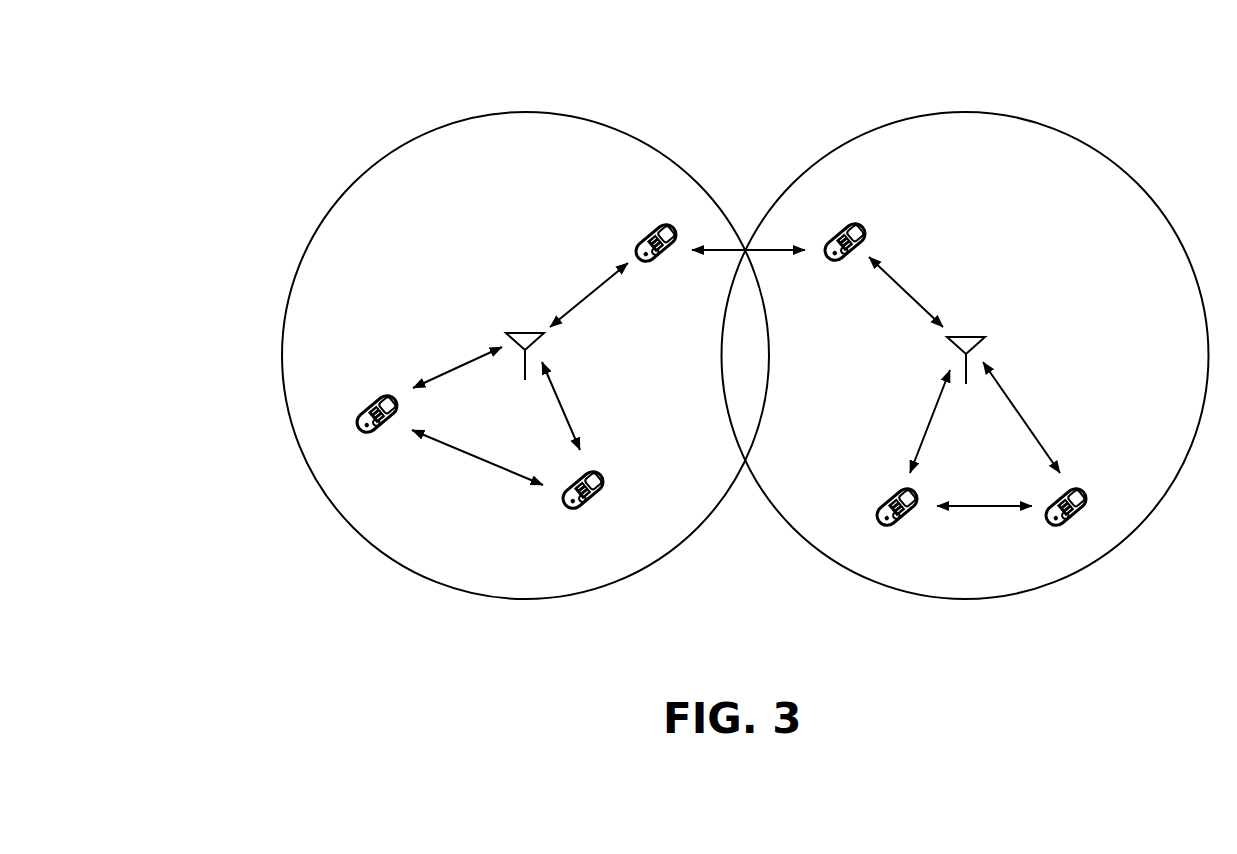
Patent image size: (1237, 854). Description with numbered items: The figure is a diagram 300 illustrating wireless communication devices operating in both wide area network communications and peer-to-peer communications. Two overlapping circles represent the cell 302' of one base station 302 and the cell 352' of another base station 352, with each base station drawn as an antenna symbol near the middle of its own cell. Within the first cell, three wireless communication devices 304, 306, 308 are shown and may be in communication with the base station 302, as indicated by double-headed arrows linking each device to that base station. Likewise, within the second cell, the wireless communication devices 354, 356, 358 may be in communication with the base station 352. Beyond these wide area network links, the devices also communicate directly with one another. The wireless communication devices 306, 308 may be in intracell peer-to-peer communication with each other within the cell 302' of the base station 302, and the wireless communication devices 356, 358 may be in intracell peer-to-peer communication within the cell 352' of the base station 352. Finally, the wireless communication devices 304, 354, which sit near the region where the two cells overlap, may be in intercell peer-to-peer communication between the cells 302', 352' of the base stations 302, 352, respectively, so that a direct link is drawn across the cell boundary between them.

The diagram 300 is at (279, 72).
The base station 302 is at (517, 341).
The cell 302' is at (525, 333).
The wireless communication device 304 is at (656, 262).
The wireless communication device 306 is at (377, 431).
The wireless communication device 308 is at (583, 506).
The base station 352 is at (985, 345).
The cell 352' is at (971, 355).
The wireless communication device 354 is at (845, 259).
The wireless communication device 356 is at (897, 524).
The wireless communication device 358 is at (1066, 524).